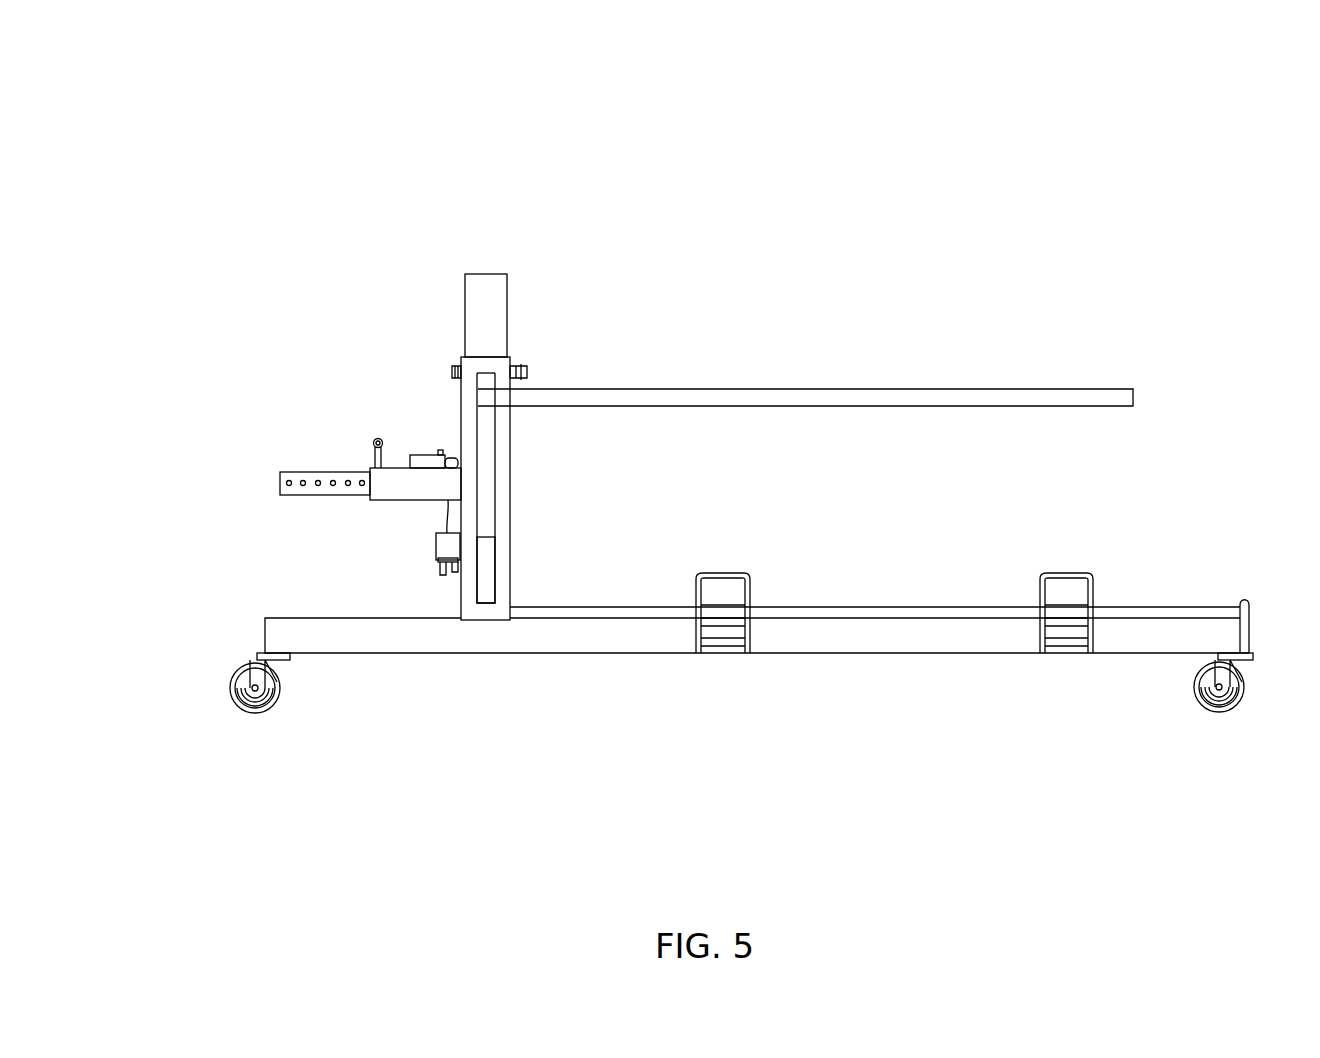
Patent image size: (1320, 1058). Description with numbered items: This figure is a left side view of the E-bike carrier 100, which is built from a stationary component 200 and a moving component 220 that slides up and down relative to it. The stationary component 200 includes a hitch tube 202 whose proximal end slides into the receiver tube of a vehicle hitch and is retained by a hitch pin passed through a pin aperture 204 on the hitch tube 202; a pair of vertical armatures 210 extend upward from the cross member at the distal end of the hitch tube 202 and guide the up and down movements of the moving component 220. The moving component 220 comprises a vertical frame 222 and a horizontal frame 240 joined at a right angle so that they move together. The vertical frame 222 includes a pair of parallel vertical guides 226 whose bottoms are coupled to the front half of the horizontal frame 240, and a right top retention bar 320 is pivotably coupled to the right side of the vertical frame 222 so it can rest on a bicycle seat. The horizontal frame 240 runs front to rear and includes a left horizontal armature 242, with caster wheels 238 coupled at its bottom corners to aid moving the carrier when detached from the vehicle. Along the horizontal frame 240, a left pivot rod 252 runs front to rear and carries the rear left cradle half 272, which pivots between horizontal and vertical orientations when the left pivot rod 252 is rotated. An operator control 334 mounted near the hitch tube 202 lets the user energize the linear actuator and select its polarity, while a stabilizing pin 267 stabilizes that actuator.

The E-bike carrier 100 is at (163, 207).
The stationary component 200 is at (432, 371).
The hitch tube 202 is at (342, 477).
The pin aperture 204 is at (345, 490).
The vertical armatures 210 is at (500, 320).
The moving component 220 is at (578, 665).
The vertical frame 222 is at (520, 255).
The vertical guides 226 is at (505, 558).
The caster wheels 238 is at (265, 707).
The horizontal frame 240 is at (1268, 593).
The left horizontal armature 242 is at (890, 648).
The left pivot rod 252 is at (873, 605).
The stabilizing pin 267 is at (710, 655).
The rear left cradle half 272 is at (1062, 658).
The right top retention bar 320 is at (1075, 396).
The operator control 334 is at (432, 458).